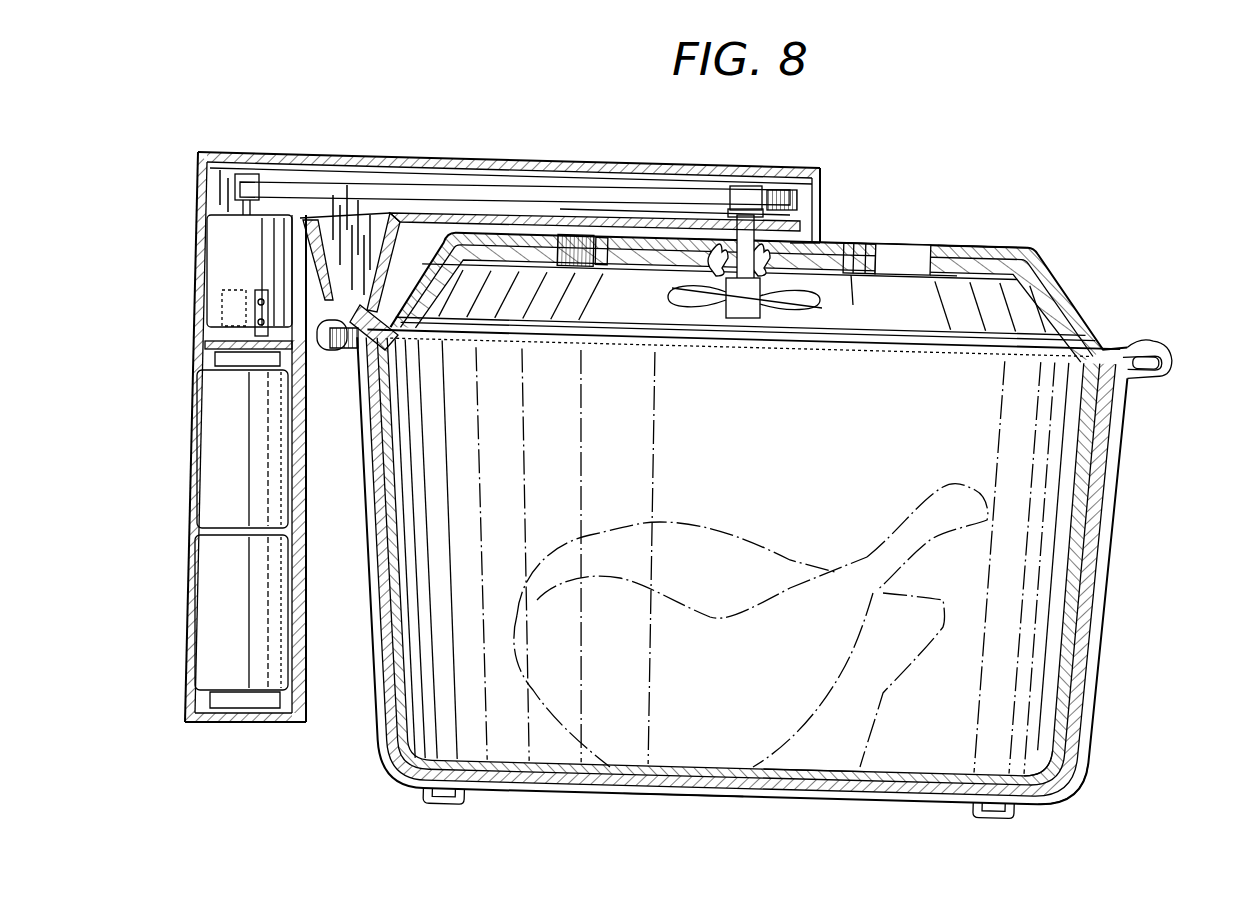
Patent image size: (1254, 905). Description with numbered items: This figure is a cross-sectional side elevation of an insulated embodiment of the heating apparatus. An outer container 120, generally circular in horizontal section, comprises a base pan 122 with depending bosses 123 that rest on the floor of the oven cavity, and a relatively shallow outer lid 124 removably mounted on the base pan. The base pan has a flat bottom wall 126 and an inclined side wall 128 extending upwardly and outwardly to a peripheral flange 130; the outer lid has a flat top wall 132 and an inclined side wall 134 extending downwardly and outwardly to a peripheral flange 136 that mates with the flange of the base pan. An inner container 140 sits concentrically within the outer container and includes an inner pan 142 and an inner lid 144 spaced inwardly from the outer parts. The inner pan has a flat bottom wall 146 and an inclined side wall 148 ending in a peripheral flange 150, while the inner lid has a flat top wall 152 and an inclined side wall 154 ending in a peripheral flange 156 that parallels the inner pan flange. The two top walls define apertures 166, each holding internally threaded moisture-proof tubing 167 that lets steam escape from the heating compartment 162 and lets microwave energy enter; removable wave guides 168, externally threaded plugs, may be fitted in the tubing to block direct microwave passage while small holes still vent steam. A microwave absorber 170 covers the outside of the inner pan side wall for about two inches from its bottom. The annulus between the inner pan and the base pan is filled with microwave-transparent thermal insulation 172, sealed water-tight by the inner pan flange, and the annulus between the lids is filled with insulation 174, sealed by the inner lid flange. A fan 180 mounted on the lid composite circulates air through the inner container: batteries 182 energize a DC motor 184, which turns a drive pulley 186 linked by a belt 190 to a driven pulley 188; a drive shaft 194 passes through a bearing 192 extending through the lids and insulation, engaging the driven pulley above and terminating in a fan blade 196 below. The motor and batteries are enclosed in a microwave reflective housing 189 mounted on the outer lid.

The outer container 120 is at (1000, 222).
The base pan 122 is at (1078, 795).
The depending bosses 123 is at (468, 805).
The outer lid 124 is at (1064, 272).
The bottom wall 126 is at (728, 792).
The inclined side wall 128 is at (1098, 622).
The peripheral flange 130 is at (1174, 352).
The top wall 132 is at (990, 240).
The inclined side wall 134 is at (1078, 290).
The peripheral flange 136 is at (1156, 340).
The inner container 140 is at (853, 282).
The inner pan 142 is at (1072, 760).
The inner lid 144 is at (976, 245).
The bottom wall 146 is at (862, 782).
The inclined side wall 148 is at (1100, 428).
The peripheral flange 150 is at (1142, 374).
The top wall 152 is at (868, 242).
The inclined side wall 154 is at (1088, 305).
The peripheral flange 156 is at (1118, 402).
The heating compartment 162 is at (762, 431).
The apertures 166 is at (908, 252).
The moisture-proof tubing 167 is at (938, 270).
The wave guides 168 is at (580, 236).
The microwave absorber 170 is at (1096, 545).
The thermal insulation 172 is at (1106, 505).
The insulation 174 is at (1045, 255).
The fan 180 is at (690, 280).
The batteries 182 is at (200, 568).
The DC motor 184 is at (212, 278).
The drive pulley 186 is at (246, 174).
The driven pulley 188 is at (716, 188).
The microwave reflective housing 189 is at (192, 430).
The belt 190 is at (393, 183).
The bearing 192 is at (812, 258).
The drive shaft 194 is at (746, 182).
The fan blade 196 is at (706, 302).